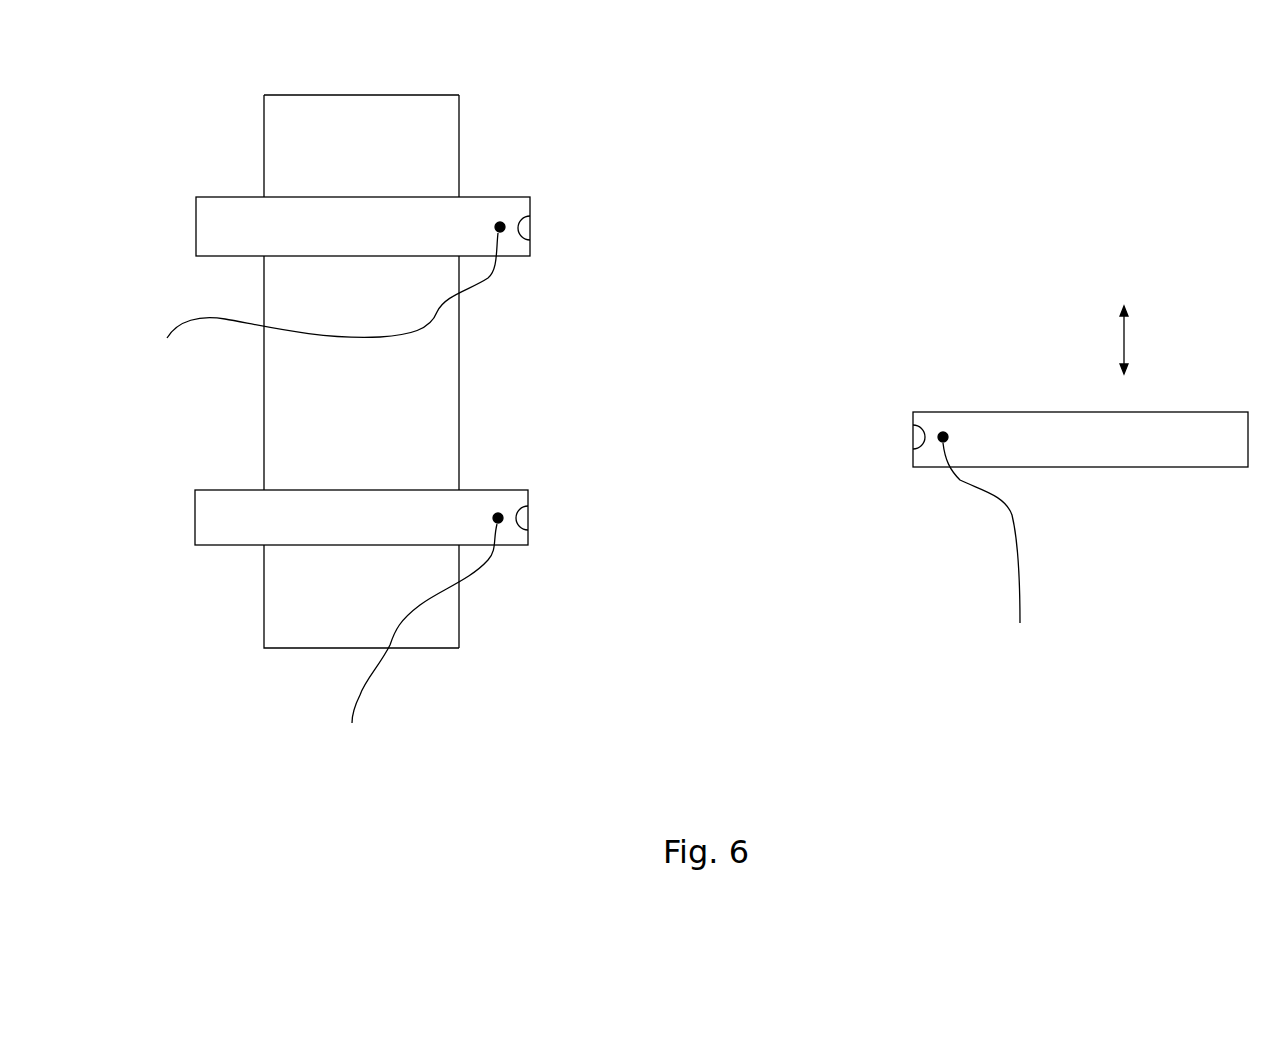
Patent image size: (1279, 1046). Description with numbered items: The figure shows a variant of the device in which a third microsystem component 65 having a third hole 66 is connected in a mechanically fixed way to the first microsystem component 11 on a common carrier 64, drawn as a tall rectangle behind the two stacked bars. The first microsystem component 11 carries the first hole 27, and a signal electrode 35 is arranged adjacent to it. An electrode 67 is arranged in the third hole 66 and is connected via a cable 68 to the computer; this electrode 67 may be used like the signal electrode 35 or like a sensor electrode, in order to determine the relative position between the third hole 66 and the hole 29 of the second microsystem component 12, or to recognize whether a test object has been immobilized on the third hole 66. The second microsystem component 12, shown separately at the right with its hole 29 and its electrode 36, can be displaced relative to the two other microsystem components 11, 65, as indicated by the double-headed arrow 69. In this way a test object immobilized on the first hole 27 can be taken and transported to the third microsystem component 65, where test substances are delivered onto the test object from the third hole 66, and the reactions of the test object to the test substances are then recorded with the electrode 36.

The first microsystem component 11 is at (470, 503).
The second microsystem component 12 is at (1133, 443).
The first hole 27 is at (532, 522).
The hole 29 is at (917, 442).
The signal electrode 35 is at (500, 524).
The electrode 36 is at (943, 443).
The carrier 64 is at (313, 605).
The third microsystem component 65 is at (472, 215).
The third hole 66 is at (533, 232).
The electrode 67 is at (502, 233).
The cable 68 is at (228, 318).
The arrow 69 is at (1127, 345).